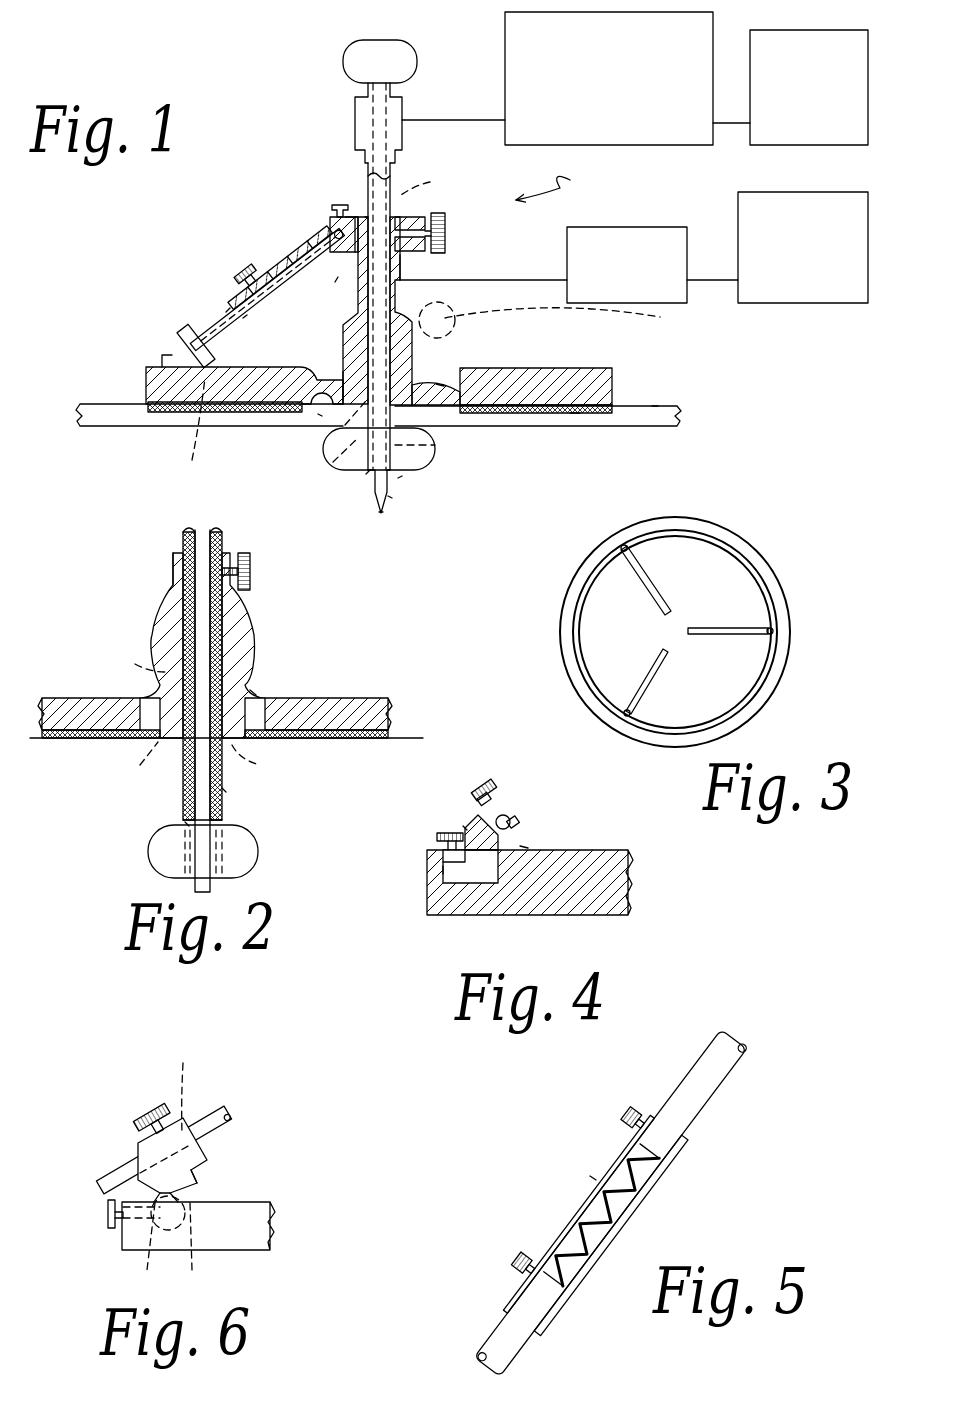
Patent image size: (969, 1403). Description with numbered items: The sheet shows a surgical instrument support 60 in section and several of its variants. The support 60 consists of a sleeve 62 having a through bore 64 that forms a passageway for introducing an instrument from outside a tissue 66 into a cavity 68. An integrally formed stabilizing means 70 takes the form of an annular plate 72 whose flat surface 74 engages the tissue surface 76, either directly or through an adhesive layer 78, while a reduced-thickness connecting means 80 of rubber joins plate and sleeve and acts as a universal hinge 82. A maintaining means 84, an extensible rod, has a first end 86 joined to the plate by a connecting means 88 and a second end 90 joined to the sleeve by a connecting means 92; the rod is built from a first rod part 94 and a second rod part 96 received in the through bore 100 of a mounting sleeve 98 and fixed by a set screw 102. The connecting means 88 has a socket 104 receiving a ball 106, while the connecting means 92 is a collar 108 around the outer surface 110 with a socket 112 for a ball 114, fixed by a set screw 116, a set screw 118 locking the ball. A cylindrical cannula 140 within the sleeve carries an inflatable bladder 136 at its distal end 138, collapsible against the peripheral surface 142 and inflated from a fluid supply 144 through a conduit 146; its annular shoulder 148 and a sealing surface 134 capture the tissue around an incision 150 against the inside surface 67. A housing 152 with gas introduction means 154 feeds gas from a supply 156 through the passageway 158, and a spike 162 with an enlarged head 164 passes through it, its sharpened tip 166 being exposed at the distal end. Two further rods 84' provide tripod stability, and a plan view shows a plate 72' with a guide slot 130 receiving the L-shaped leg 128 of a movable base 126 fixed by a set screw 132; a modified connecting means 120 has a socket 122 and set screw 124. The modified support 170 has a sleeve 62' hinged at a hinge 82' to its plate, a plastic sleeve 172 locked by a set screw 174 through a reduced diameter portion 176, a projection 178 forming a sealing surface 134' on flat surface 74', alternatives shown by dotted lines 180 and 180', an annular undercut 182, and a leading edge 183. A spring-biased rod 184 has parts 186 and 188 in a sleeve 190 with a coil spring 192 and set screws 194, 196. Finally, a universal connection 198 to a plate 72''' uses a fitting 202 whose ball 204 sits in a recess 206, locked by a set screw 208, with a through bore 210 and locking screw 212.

In FIG. 1, the instrument support 60 is at (556, 181).
In FIG. 1, the sleeve 62 is at (521, 311).
In FIG. 2, the sleeve 62' is at (230, 645).
In FIG. 1, the through bore 64 is at (402, 298).
In FIG. 1, the tissue 66 is at (662, 430).
In FIG. 1, the inside surface 67 is at (118, 428).
In FIG. 1, the cavity 68 is at (526, 475).
In FIG. 1, the means for stabilizing 70 is at (530, 368).
In FIG. 1, the annular plate 72 is at (543, 369).
In FIG. 3, the plate 72' is at (675, 632).
In FIG. 4, the plate 72' is at (535, 902).
In FIG. 6, the plate 72''' is at (220, 1205).
In FIG. 1, the flat surface 74 is at (581, 444).
In FIG. 2, the flat surface 74' is at (216, 761).
In FIG. 1, the tissue surface 76 is at (655, 405).
In FIG. 2, the tissue surface 76 is at (410, 735).
In FIG. 1, the adhesive layer 78 is at (230, 413).
In FIG. 1, the connecting means 80 is at (320, 418).
In FIG. 1, the hinge 82 is at (320, 362).
In FIG. 2, the hinge 82' is at (288, 675).
In FIG. 1, the extensible rod 84 is at (259, 289).
In FIG. 3, the extensible rod 84 is at (663, 580).
In FIG. 3, the mounting rod 84' is at (672, 681).
In FIG. 1, the first end 86 is at (228, 312).
In FIG. 1, the connecting means 88 is at (170, 345).
In FIG. 1, the second end 90 is at (331, 230).
In FIG. 1, the connecting means 92 is at (368, 212).
In FIG. 1, the first rod part 94 is at (243, 318).
In FIG. 1, the second rod part 96 is at (338, 226).
In FIG. 1, the mounting sleeve 98 is at (312, 262).
In FIG. 1, the through bore 100 is at (335, 280).
In FIG. 1, the set screw 102 is at (244, 270).
In FIG. 1, the socket 104 is at (186, 430).
In FIG. 1, the ball 106 is at (185, 335).
In FIG. 1, the collar 108 is at (422, 222).
In FIG. 1, the outer surface 110 is at (402, 258).
In FIG. 1, the socket 112 is at (305, 250).
In FIG. 1, the ball 114 is at (346, 213).
In FIG. 1, the set screw 116 is at (446, 232).
In FIG. 1, the set screw 118 is at (356, 212).
In FIG. 4, the connecting means 120 is at (525, 845).
In FIG. 4, the socket 122 is at (505, 815).
In FIG. 4, the set screw 124 is at (484, 784).
In FIG. 3, the movable base 126 is at (622, 547).
In FIG. 4, the movable base 126 is at (465, 826).
In FIG. 4, the L-shaped leg 128 is at (443, 870).
In FIG. 3, the guide slot 130 is at (600, 680).
In FIG. 4, the guide slot 130 is at (470, 883).
In FIG. 4, the set screw 132 is at (445, 832).
In FIG. 1, the sealing surface 134 is at (317, 451).
In FIG. 2, the sealing surface 134' is at (152, 806).
In FIG. 1, the inflatable bladder 136 is at (435, 462).
In FIG. 2, the inflatable bladder 136 is at (258, 862).
In FIG. 1, the distal end 138 is at (400, 478).
In FIG. 1, the cannula 140 is at (392, 180).
In FIG. 2, the cannula 140 is at (225, 835).
In FIG. 1, the peripheral surface 142 is at (440, 442).
In FIG. 1, the fluid supply 144 is at (777, 247).
In FIG. 1, the conduit 146 is at (543, 265).
In FIG. 1, the annular shoulder 148 is at (440, 385).
In FIG. 1, the incision 150 is at (366, 474).
In FIG. 1, the housing 152 is at (403, 107).
In FIG. 1, the gas introduction means 154 is at (557, 78).
In FIG. 1, the gas supply 156 is at (790, 87).
In FIG. 1, the passageway 158 is at (390, 497).
In FIG. 1, the spike 162 is at (433, 179).
In FIG. 1, the enlarged head 164 is at (408, 45).
In FIG. 1, the tip 166 is at (381, 516).
In FIG. 2, the support 170 is at (255, 565).
In FIG. 2, the plastic sleeve 172 is at (225, 800).
In FIG. 2, the set screw 174 is at (252, 585).
In FIG. 2, the reduced diameter portion 176 is at (175, 572).
In FIG. 2, the projection 178 is at (224, 790).
In FIG. 2, the dotted line 180 is at (132, 766).
In FIG. 2, the dotted lines 180' is at (126, 662).
In FIG. 2, the annular undercut 182 is at (265, 765).
In FIG. 2, the leading edge 183 is at (170, 825).
In FIG. 5, the extensible rod 184 is at (592, 1178).
In FIG. 6, the extensible rod 184 is at (215, 1105).
In FIG. 5, the first rod part 186 is at (710, 1086).
In FIG. 5, the second rod part 188 is at (545, 1305).
In FIG. 5, the sleeve 190 is at (650, 1186).
In FIG. 5, the coil spring 192 is at (565, 1225).
In FIG. 5, the set screw 194 is at (518, 1258).
In FIG. 5, the set screw 196 is at (628, 1112).
In FIG. 6, the universal connection 198 is at (140, 1150).
In FIG. 6, the fitting 202 is at (205, 1172).
In FIG. 6, the ball 204 is at (192, 1250).
In FIG. 6, the recess 206 is at (150, 1250).
In FIG. 6, the set screw 208 is at (108, 1215).
In FIG. 6, the through bore 210 is at (178, 1086).
In FIG. 6, the locking screw 212 is at (142, 1105).